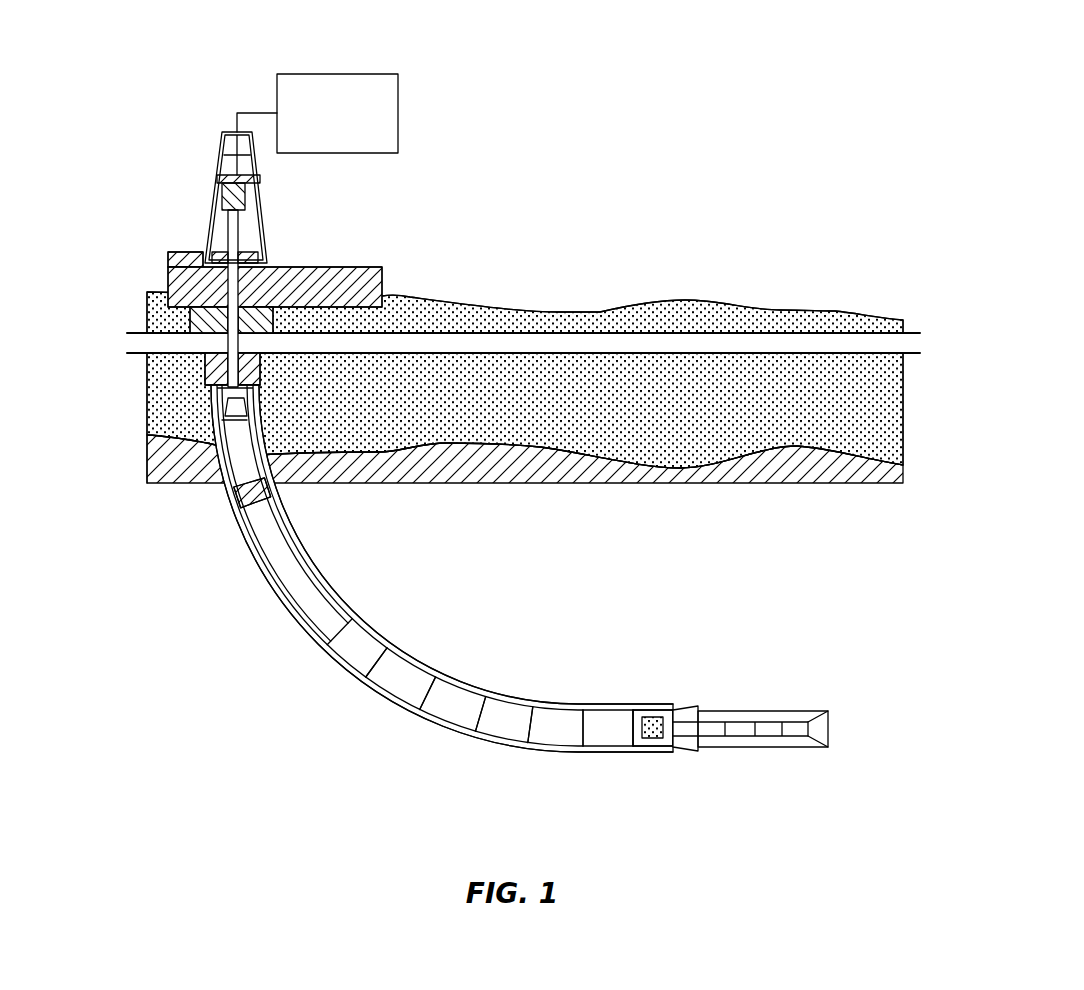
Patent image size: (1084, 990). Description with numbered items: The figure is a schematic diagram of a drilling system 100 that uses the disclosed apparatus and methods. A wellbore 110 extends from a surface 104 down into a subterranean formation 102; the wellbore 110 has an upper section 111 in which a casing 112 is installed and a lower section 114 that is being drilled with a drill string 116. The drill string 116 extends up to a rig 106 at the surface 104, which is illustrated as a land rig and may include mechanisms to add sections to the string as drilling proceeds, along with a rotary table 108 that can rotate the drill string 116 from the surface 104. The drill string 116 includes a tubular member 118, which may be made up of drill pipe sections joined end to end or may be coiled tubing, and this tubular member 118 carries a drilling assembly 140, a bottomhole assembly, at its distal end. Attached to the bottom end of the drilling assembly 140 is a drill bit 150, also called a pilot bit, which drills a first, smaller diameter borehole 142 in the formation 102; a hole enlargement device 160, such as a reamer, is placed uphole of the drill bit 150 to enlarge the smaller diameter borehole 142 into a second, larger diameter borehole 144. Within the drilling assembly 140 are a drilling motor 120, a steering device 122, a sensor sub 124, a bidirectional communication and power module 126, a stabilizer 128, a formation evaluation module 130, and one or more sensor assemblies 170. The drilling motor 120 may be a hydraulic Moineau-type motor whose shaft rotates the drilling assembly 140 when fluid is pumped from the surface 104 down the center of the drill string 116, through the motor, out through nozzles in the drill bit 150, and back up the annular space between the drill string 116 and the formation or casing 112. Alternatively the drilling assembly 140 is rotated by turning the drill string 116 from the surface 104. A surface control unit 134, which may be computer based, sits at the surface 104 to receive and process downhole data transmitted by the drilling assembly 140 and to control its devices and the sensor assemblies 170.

The drilling system 100 is at (497, 407).
The subterranean formation 102 is at (525, 432).
The surface 104 is at (140, 333).
The rig 106 is at (217, 235).
The rotary table 108 is at (247, 252).
The wellbore 110 is at (522, 598).
The upper section 111 is at (272, 429).
The casing 112 is at (205, 415).
The lower section 114 is at (288, 620).
The drill string 116 is at (286, 567).
The tubular member 118 is at (269, 531).
The drilling motor 120 is at (605, 717).
The steering device 122 is at (553, 713).
The sensor sub 124 is at (498, 703).
The bidirectional communication and power module 126 is at (450, 702).
The stabilizer 128 is at (398, 683).
The formation evaluation module 130 is at (353, 657).
The surface control unit 134 is at (308, 74).
The drilling assembly 140 is at (790, 726).
The smaller diameter borehole 142 is at (778, 710).
The larger diameter borehole 144 is at (340, 608).
The drill bit 150 is at (822, 727).
The hole enlargement device 160 is at (690, 698).
The sensor assembly 170 is at (653, 740).